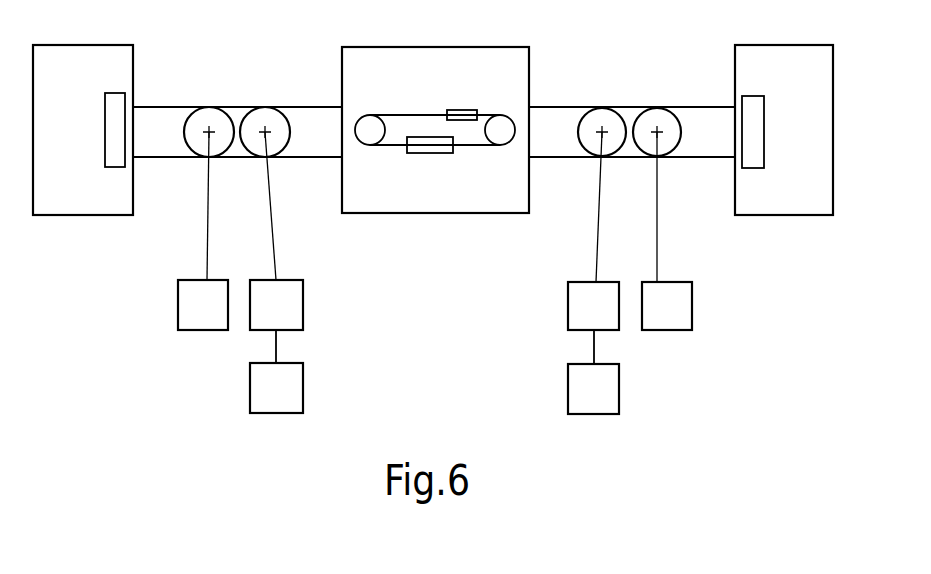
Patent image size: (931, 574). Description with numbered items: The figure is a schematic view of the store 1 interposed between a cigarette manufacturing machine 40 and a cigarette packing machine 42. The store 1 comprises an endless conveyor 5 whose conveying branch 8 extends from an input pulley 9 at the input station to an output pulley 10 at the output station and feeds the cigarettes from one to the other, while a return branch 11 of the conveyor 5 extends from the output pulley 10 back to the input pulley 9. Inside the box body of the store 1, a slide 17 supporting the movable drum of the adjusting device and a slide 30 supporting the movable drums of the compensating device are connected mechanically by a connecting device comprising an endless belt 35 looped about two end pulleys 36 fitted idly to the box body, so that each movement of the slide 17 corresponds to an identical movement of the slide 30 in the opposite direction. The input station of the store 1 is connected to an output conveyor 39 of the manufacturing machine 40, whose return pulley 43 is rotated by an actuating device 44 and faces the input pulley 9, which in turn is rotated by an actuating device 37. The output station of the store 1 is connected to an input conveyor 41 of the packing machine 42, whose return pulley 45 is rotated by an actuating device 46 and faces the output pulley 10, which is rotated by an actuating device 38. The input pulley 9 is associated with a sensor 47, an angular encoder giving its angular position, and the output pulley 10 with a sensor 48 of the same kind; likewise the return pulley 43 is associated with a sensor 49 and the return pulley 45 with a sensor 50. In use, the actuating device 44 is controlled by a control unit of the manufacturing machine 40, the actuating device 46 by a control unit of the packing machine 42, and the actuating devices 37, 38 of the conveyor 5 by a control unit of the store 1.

The store 1 is at (445, 66).
The endless conveyor 5 is at (305, 106).
The conveying branch 8 is at (325, 86).
The input pulley 9 is at (606, 118).
The output pulley 10 is at (256, 118).
The return branch 11 is at (327, 165).
The slide 17 is at (465, 115).
The slide 30 is at (430, 154).
The endless belt 35 is at (398, 115).
The end pulleys 36 is at (368, 122).
The actuating device 37 is at (572, 306).
The actuating device 38 is at (296, 313).
The output conveyor 39 is at (713, 106).
The cigarette manufacturing machine 40 is at (775, 56).
The input conveyor 41 is at (158, 106).
The cigarette packing machine 42 is at (104, 56).
The return pulley 43 is at (655, 110).
The actuating device 44 is at (755, 168).
The return pulley 45 is at (215, 117).
The actuating device 46 is at (117, 165).
The sensor 47 is at (571, 396).
The sensor 48 is at (295, 403).
The sensor 49 is at (665, 323).
The sensor 50 is at (215, 322).